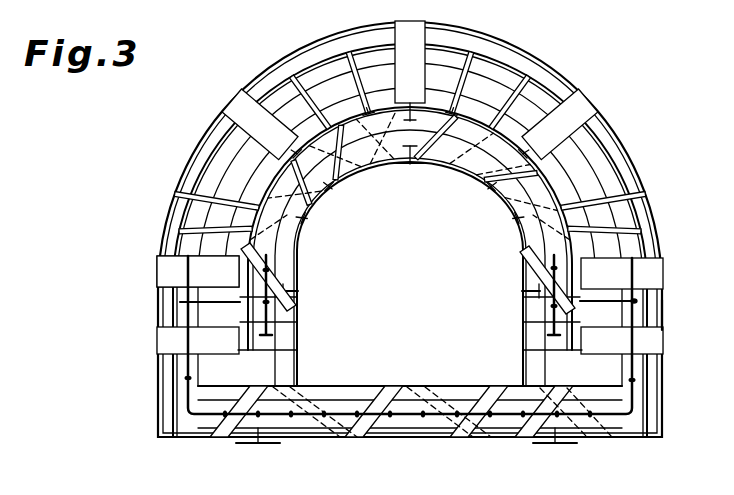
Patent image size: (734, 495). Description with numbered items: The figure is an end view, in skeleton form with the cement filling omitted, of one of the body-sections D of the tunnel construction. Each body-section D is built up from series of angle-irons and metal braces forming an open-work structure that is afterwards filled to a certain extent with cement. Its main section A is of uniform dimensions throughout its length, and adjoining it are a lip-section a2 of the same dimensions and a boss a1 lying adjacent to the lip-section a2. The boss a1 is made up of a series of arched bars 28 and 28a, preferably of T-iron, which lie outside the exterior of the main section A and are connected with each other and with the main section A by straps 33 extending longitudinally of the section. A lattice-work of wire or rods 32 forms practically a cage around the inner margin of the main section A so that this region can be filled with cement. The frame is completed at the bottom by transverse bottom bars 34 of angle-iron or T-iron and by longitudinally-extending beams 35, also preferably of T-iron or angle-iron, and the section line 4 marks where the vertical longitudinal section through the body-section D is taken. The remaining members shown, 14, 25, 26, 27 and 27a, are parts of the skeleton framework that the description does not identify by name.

The crown radial strut 14 is at (423, 4).
The straps 33 is at (410, 124).
The lattice-work of wire 32 is at (380, 455).
The arched bars 28 is at (172, 211).
The arched bars 28a is at (198, 271).
The inner brackets 27 is at (410, 166).
The inner ring 27a is at (284, 258).
The lip-section a2 is at (302, 232).
The boss a1 is at (612, 179).
The diagonal brace 25 is at (290, 306).
The cross bar 26 is at (255, 299).
The main section A is at (410, 272).
The body-section D is at (662, 313).
The transverse bottom bars 34 is at (392, 386).
The longitudinally-extending beams 35 is at (258, 444).
The section line 4 is at (410, 445).